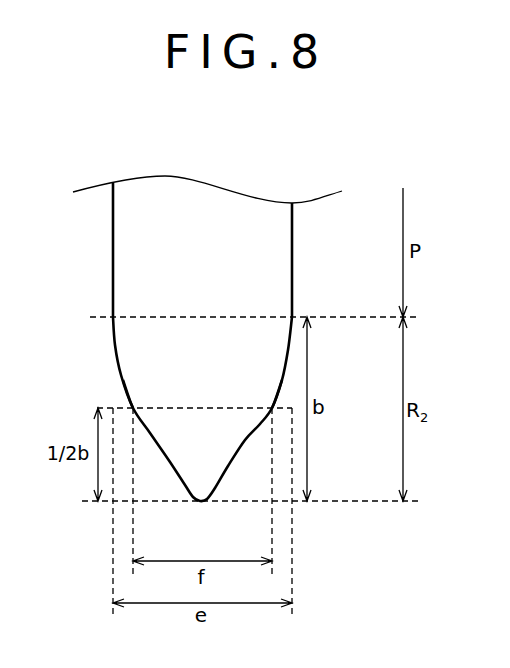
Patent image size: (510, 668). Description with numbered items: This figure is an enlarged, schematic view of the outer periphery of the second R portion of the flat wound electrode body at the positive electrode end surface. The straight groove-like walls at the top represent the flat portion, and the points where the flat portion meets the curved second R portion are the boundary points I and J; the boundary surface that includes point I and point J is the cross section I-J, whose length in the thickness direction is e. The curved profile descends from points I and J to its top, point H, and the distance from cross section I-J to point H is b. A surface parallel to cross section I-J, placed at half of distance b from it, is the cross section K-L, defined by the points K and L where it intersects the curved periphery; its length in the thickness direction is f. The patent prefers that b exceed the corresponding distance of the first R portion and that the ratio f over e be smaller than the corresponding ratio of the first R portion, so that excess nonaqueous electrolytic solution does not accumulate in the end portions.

The boundary point I is at (113, 316).
The boundary point J is at (292, 317).
The cross-section point K is at (133, 408).
The cross-section point L is at (272, 408).
The top of the second R portion H is at (202, 423).